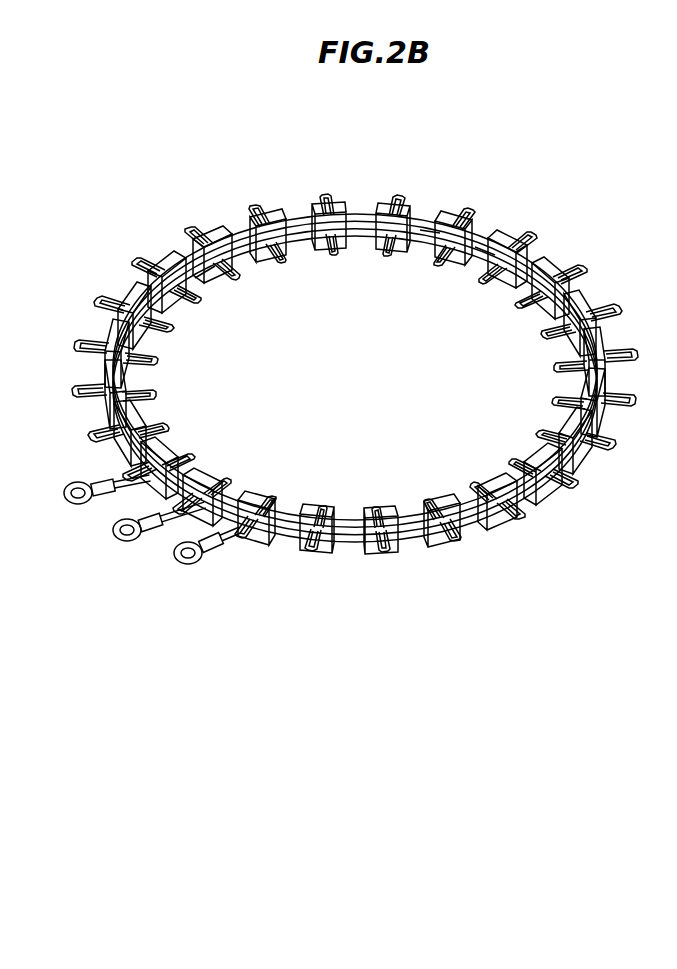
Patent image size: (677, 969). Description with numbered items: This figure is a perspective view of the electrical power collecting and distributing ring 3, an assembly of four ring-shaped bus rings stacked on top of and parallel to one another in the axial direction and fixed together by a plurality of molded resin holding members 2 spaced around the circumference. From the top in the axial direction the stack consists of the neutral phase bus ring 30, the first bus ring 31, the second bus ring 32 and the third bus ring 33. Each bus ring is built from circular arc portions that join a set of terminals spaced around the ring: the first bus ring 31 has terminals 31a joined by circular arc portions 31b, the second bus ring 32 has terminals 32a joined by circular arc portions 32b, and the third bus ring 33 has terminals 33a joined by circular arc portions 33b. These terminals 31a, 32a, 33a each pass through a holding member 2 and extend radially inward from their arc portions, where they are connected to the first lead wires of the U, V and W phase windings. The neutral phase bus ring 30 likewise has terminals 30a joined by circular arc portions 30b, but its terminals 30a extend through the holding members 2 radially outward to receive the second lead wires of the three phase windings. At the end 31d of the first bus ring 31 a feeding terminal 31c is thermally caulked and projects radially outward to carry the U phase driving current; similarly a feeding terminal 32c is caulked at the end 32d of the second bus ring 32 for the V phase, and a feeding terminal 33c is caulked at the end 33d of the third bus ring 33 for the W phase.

The holding member 2 is at (586, 303).
The electrical power collecting and distributing ring 3 is at (614, 192).
The neutral phase bus ring 30 is at (348, 520).
The terminal 30a is at (203, 235).
The circular arc portion 30b is at (252, 233).
The first bus ring 31 is at (410, 539).
The terminal 31a is at (240, 278).
The circular arc portion 31b is at (205, 274).
The feeding terminal 31c is at (190, 568).
The end 31d is at (222, 532).
The second bus ring 32 is at (472, 519).
The terminal 32a is at (290, 262).
The circular arc portion 32b is at (430, 233).
The feeding terminal 32c is at (113, 535).
The end 32d is at (165, 515).
The third bus ring 33 is at (528, 499).
The terminal 33a is at (497, 281).
The circular arc portion 33b is at (485, 255).
The feeding terminal 33c is at (68, 498).
The end 33d is at (128, 477).